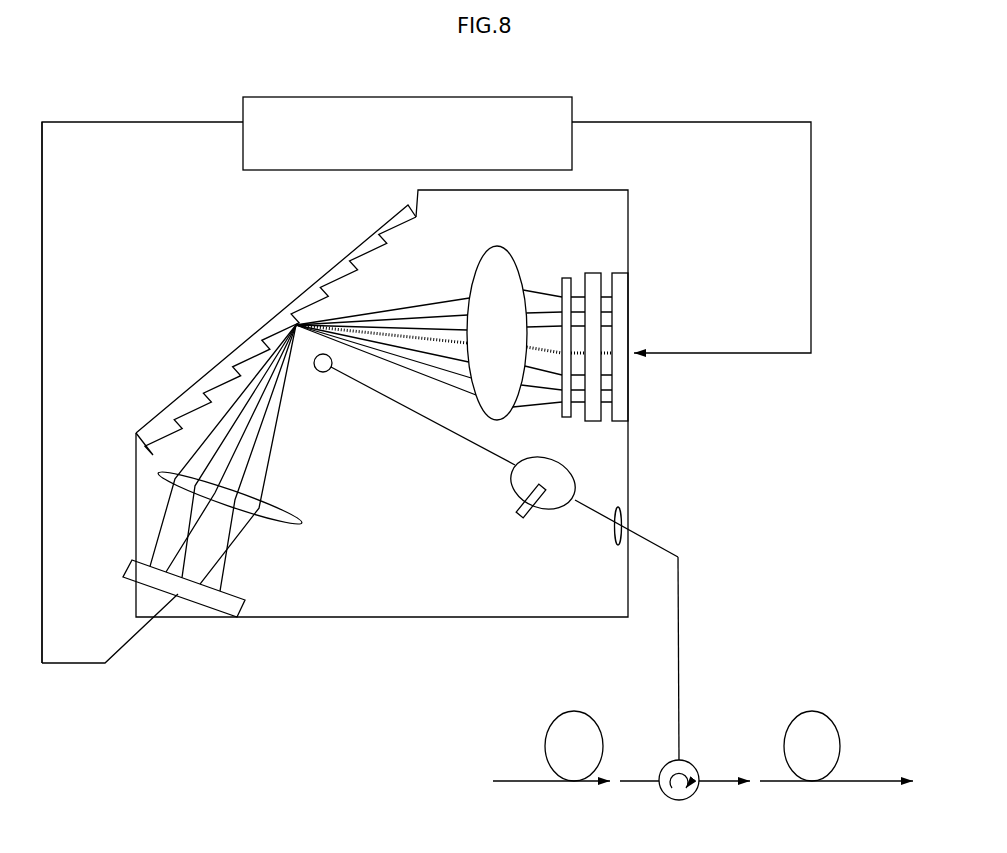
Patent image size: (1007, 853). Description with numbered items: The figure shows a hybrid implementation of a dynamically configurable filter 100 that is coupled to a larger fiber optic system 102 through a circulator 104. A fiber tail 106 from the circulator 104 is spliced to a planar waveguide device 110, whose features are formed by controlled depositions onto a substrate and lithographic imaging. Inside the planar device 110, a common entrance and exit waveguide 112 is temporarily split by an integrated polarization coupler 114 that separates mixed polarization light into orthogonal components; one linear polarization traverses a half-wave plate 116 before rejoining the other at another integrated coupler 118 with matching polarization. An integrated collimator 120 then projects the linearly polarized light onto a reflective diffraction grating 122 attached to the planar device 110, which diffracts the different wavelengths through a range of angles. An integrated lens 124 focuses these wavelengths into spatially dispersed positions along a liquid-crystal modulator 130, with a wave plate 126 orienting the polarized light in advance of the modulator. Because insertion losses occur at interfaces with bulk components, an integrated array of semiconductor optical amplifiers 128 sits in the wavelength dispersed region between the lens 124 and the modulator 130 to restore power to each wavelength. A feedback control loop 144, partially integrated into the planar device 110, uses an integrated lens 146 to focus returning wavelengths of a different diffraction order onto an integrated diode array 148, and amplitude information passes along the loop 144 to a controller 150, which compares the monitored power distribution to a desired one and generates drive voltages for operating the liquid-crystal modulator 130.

The dynamically configurable filter 100 is at (166, 76).
The fiber optic system 102 is at (813, 710).
The circulator 104 is at (683, 800).
The fiber tail 106 is at (681, 700).
The planar waveguide device 110 is at (370, 578).
The common entrance and exit waveguide 112 is at (600, 512).
The integrated polarization coupler 114 is at (578, 503).
The half-wave plate 116 is at (520, 515).
The integrated coupler 118 is at (513, 466).
The integrated collimator 120 is at (323, 372).
The reflective diffraction grating 122 is at (352, 243).
The integrated lens 124 is at (490, 252).
The wave plate 126 is at (573, 288).
The integrated array of semiconductor optical amplifiers 128 is at (591, 428).
The liquid-crystal modulator 130 is at (636, 268).
The feedback control loop 144 is at (44, 302).
The integrated lens 146 is at (293, 516).
The integrated diode array 148 is at (248, 607).
The controller 150 is at (413, 140).